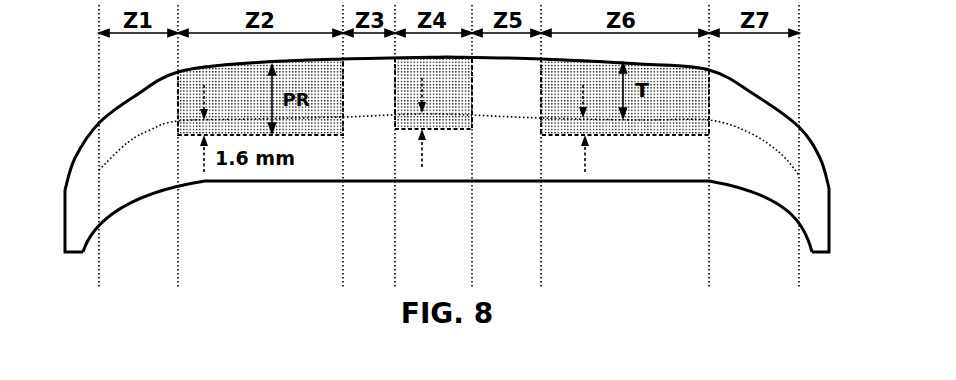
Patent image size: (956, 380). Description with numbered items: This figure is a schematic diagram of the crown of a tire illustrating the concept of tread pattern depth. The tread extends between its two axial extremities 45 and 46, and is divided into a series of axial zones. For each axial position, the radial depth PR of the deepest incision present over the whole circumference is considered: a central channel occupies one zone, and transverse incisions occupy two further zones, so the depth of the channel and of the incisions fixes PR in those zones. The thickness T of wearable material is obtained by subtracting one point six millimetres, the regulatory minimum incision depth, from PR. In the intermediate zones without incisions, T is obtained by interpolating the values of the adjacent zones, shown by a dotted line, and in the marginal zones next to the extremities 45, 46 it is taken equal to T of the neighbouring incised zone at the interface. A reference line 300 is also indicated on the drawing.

The axial extremity of the tread 45 is at (92, 116).
The axial extremity of the tread 46 is at (801, 117).
The reference line 300 is at (508, 117).